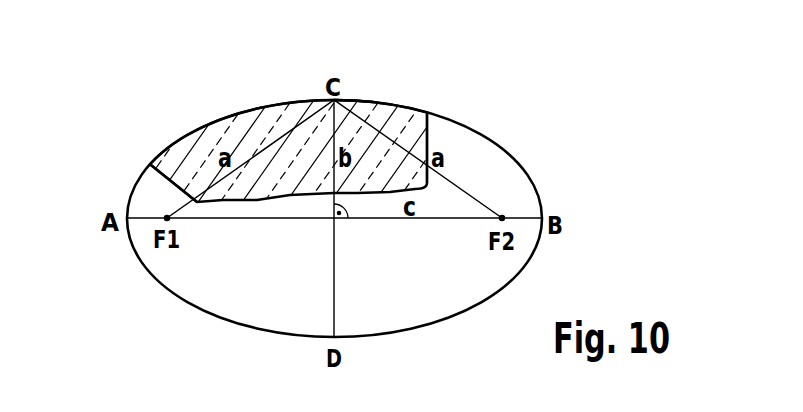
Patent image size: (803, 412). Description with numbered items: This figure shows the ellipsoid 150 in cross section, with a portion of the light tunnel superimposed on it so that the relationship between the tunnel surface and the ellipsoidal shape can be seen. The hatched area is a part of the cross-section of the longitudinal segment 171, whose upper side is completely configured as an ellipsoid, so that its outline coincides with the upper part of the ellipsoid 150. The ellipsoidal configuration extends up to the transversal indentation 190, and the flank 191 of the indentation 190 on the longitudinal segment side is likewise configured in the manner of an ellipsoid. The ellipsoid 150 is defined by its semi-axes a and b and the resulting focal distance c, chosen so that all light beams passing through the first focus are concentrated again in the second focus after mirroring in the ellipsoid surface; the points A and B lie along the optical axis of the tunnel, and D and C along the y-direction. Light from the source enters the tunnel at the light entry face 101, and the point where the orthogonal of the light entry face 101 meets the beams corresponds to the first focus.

The light entry face 101 is at (148, 193).
The ellipsoid 150 is at (530, 180).
The longitudinal segment 171 is at (187, 163).
The transversal indentation 190 is at (433, 113).
The flank of the indentation 191 is at (373, 101).